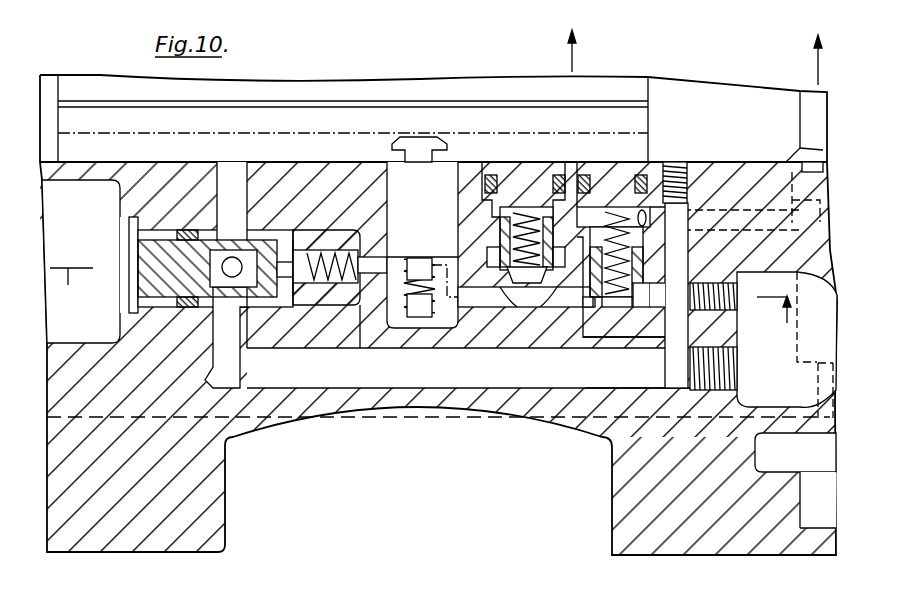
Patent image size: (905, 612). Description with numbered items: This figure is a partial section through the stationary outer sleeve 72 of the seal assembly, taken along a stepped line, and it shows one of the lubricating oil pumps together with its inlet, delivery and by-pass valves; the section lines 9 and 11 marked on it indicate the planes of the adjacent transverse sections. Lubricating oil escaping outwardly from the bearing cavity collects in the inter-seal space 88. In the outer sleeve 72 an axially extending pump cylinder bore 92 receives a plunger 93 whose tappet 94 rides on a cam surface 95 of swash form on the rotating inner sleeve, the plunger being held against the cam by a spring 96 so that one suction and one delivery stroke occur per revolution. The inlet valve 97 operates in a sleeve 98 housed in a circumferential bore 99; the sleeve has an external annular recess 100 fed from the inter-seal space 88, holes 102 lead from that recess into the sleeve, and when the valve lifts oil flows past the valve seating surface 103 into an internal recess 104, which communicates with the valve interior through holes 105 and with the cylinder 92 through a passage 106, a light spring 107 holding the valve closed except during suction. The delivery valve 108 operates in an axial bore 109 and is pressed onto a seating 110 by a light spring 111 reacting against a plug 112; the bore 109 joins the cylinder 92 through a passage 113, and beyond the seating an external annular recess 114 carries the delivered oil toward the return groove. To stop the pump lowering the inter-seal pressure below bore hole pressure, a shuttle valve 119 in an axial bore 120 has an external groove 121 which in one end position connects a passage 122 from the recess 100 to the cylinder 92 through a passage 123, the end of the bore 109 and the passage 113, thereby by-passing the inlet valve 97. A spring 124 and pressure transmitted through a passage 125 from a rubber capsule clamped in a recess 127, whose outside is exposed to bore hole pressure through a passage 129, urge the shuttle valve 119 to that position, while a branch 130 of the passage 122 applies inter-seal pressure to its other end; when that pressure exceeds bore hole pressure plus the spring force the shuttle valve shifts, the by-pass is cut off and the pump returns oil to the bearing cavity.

The section line 9- 9 is at (439, 293).
The section line 11- 11 is at (686, 55).
The outer sleeve 72 is at (212, 497).
The inter-seal space 88 is at (160, 155).
The pump cylinder bore 92 is at (388, 200).
The plunger 93 is at (450, 175).
The tappet 94 is at (425, 148).
The cam surface 95 is at (205, 133).
The spring 96 is at (425, 320).
The inlet valve 97 is at (312, 232).
The sleeve 98 is at (348, 240).
The bore 99 is at (318, 283).
The external annular recess 100 is at (238, 310).
The holes 102 is at (226, 337).
The valve seating surface 103 is at (256, 305).
The internal recess 104 is at (283, 287).
The holes 105 is at (285, 232).
The passage 106 is at (371, 274).
The light spring 107 is at (348, 305).
The delivery valve 108 is at (525, 278).
The bore 109 is at (490, 174).
The seating 110 is at (562, 298).
The light spring 111 is at (507, 284).
The plug 112 is at (525, 172).
The passage 113 is at (475, 300).
The external annular recess 114 is at (468, 252).
The shuttle valve 119 is at (621, 330).
The axial bore 120 is at (575, 337).
The external groove 121 is at (592, 340).
The passage 122 is at (688, 337).
The passage 123 is at (550, 340).
The spring 124 is at (599, 166).
The passage 125 is at (730, 210).
The recess 127 is at (830, 345).
The passage 129 is at (832, 392).
The branch 130 is at (606, 340).